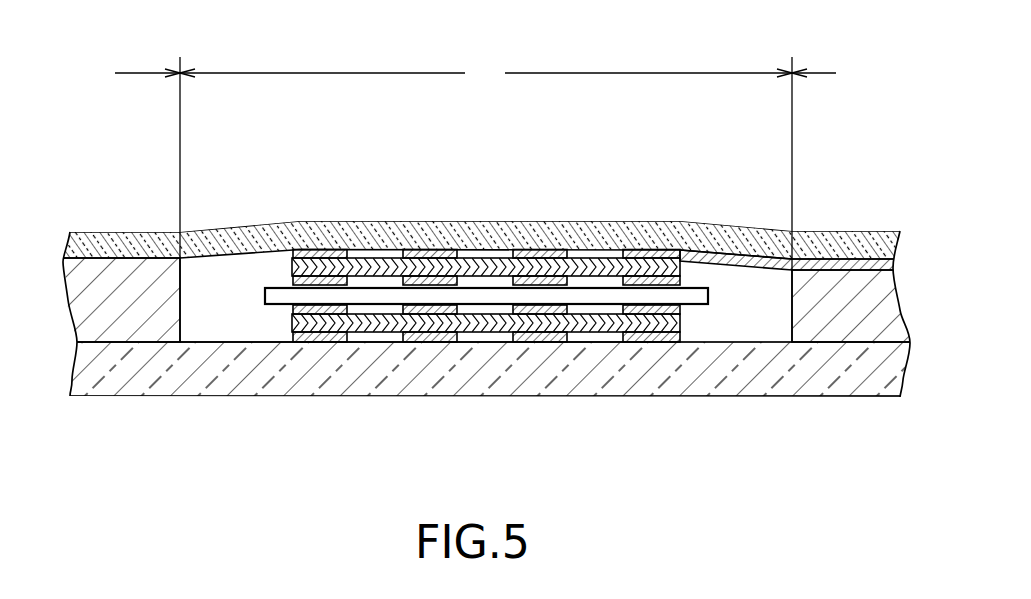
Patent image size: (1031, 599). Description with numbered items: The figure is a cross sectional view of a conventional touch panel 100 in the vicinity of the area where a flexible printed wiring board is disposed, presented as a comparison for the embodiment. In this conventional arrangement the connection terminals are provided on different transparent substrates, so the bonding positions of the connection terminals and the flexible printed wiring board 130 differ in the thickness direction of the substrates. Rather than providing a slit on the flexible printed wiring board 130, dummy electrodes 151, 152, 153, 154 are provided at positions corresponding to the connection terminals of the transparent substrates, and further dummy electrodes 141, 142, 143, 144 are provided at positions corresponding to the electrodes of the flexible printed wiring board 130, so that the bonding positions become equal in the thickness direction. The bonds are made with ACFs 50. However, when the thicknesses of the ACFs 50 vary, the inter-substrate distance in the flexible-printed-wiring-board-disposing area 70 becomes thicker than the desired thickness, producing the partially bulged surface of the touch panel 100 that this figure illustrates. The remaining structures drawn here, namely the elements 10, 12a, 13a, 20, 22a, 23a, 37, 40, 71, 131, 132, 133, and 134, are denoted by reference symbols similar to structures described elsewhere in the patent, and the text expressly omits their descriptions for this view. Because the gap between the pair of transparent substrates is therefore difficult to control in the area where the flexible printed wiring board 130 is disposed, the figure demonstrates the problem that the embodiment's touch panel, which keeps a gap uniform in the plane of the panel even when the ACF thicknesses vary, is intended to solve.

The touch panel 100 is at (896, 67).
The cover layer 10 is at (900, 243).
The adhesive layer 12a is at (672, 257).
The bump electrode 13a is at (543, 251).
The substrate 20 is at (897, 373).
The substrate surface 22a is at (283, 343).
The substrate surface 23a is at (392, 343).
The shim plate 37 is at (265, 288).
The support member 40 is at (883, 298).
The ACFs 50 is at (643, 326).
The flexible-printed-wiring-board-disposing area 70 is at (486, 199).
The support width 71 is at (474, 74).
The flexible printed wiring board 130 is at (486, 323).
The lower piezoelectric element 131 is at (452, 399).
The electrode 132 is at (473, 335).
The electrode 133 is at (504, 270).
The electrode 134 is at (612, 273).
The dummy electrode 141 is at (466, 200).
The dummy electrode 142 is at (393, 267).
The dummy electrode 143 is at (582, 332).
The dummy electrode 144 is at (683, 310).
The dummy electrode 151 is at (313, 256).
The dummy electrode 152 is at (454, 251).
The dummy electrode 153 is at (511, 342).
The dummy electrode 154 is at (621, 338).